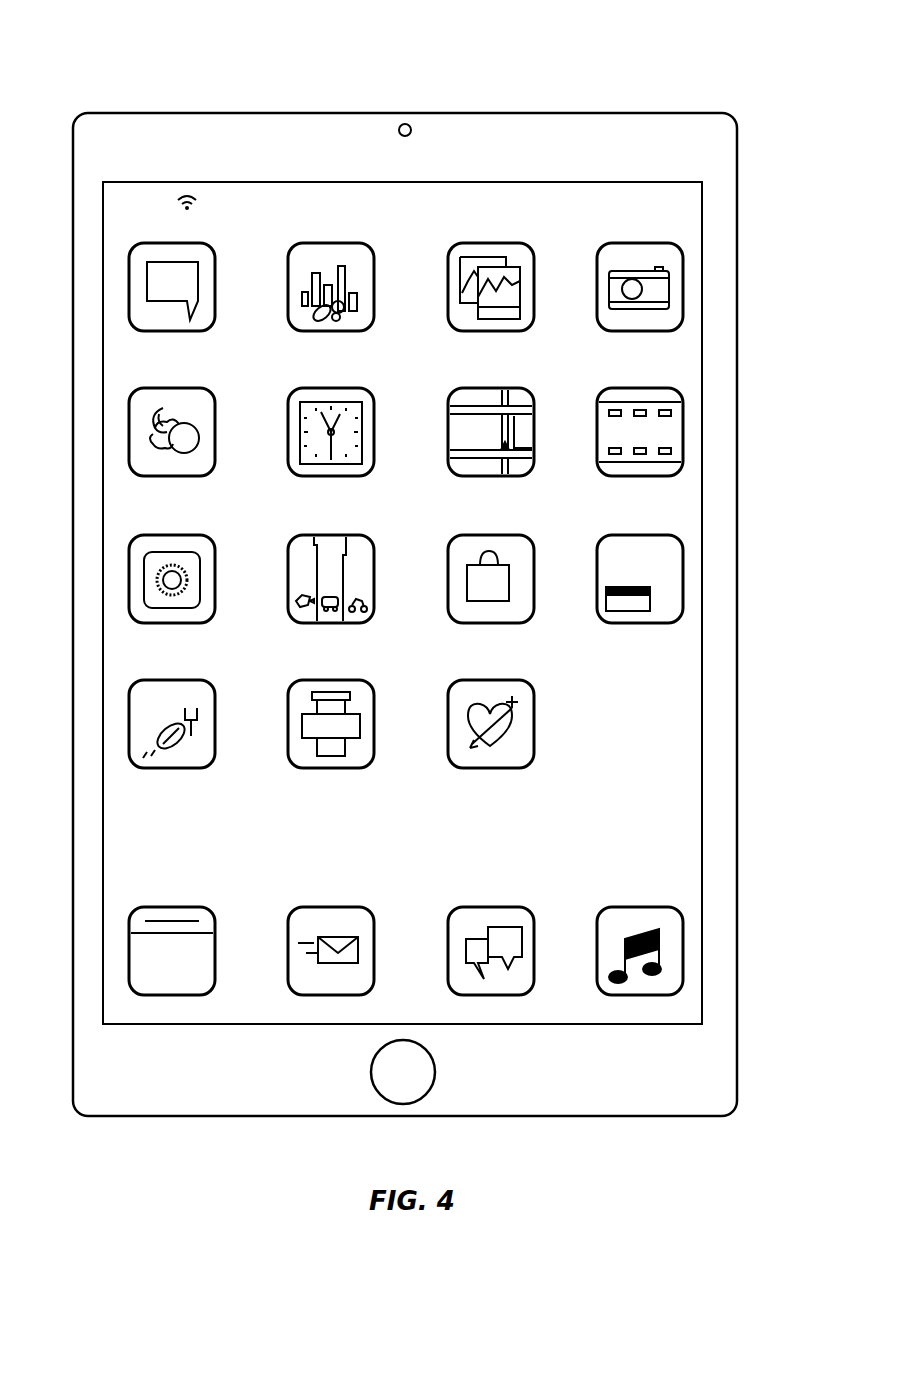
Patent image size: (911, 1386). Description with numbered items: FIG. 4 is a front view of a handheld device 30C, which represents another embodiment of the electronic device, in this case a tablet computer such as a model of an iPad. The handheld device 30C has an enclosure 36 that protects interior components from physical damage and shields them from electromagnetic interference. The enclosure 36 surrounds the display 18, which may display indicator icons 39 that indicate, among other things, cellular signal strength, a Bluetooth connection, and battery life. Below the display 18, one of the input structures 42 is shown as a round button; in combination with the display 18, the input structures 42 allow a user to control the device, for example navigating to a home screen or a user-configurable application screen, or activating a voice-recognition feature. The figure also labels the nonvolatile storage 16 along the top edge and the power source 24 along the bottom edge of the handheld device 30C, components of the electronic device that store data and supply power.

The handheld device 30C is at (84, 62).
The nonvolatile storage 16 is at (130, 113).
The enclosure 36 is at (658, 113).
The display 18 is at (703, 682).
The indicator icons 39 is at (413, 253).
The input structures 42 is at (436, 1072).
The power source 24 is at (406, 1120).